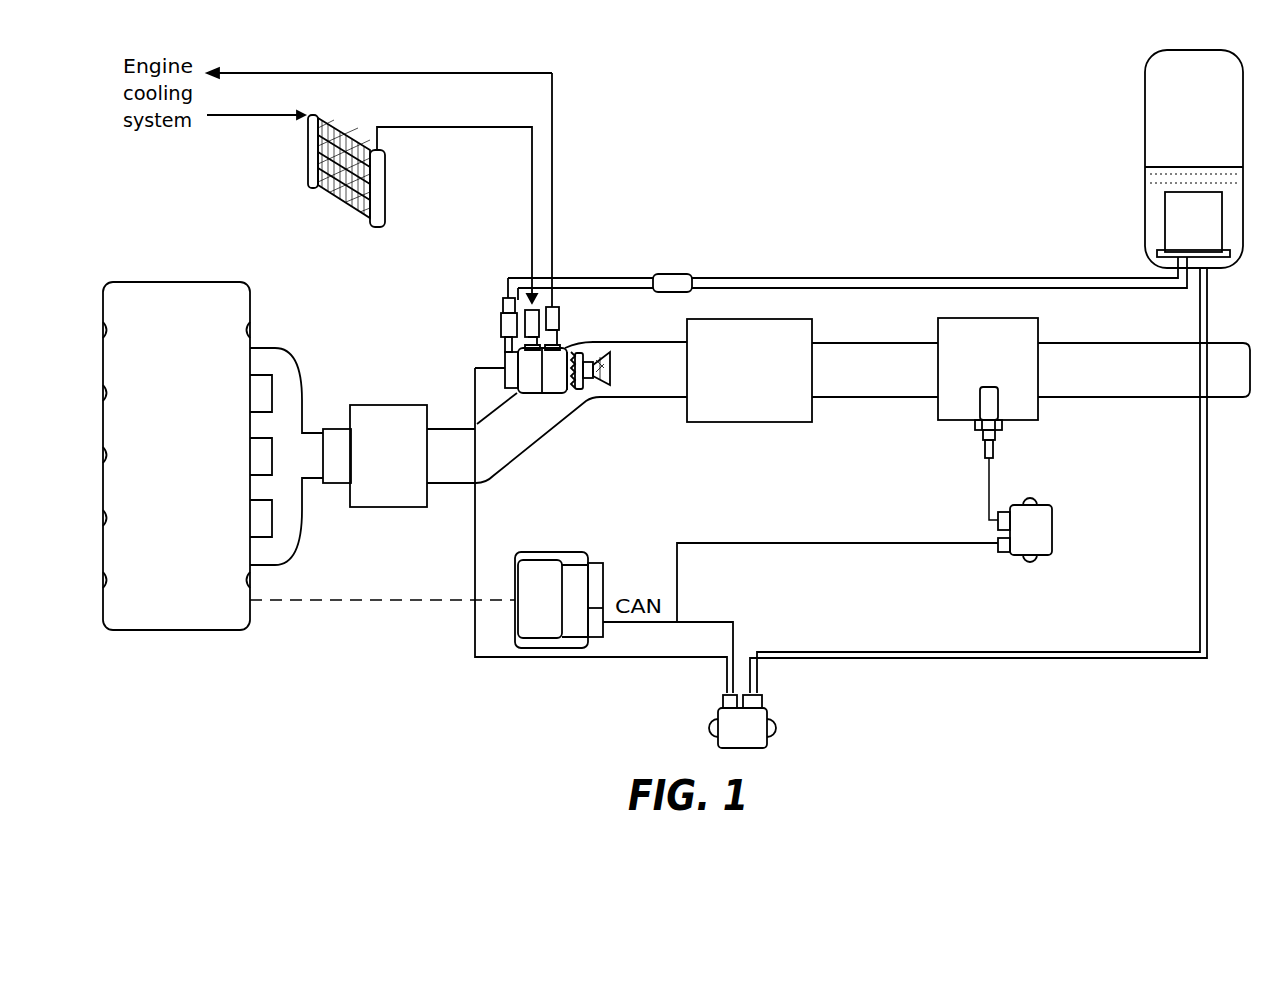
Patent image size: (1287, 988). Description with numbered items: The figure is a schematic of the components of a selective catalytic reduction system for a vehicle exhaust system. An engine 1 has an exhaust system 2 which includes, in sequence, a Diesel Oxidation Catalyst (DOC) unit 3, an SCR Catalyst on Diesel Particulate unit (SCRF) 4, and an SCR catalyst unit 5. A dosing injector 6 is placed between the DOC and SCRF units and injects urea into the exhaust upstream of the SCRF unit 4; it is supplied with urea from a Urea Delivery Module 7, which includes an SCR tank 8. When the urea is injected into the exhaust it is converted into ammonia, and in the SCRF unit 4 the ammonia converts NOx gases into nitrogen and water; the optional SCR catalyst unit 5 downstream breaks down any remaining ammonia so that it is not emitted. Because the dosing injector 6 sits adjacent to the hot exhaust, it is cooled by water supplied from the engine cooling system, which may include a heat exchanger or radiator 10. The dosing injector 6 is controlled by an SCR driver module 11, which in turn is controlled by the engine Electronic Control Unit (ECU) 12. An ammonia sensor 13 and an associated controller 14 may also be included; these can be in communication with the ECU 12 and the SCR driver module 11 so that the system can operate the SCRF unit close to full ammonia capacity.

The engine 1 is at (128, 282).
The exhaust system 2 is at (870, 397).
The Diesel Oxidation Catalyst (DOC) unit 3 is at (362, 405).
The SCR Catalyst on Diesel Particulate unit (SCRF) 4 is at (795, 422).
The SCR catalyst unit 5 is at (1040, 330).
The dosing injector 6 is at (550, 395).
The Urea Delivery Module 7 is at (1222, 207).
The SCR tank 8 is at (1145, 82).
The heat exchanger/radiator 10 is at (308, 170).
The SCR driver module 11 is at (777, 728).
The engine Electronic Control Unit (ECU) 12 is at (560, 648).
The ammonia sensor 13 is at (983, 448).
The controller 14 is at (1030, 563).